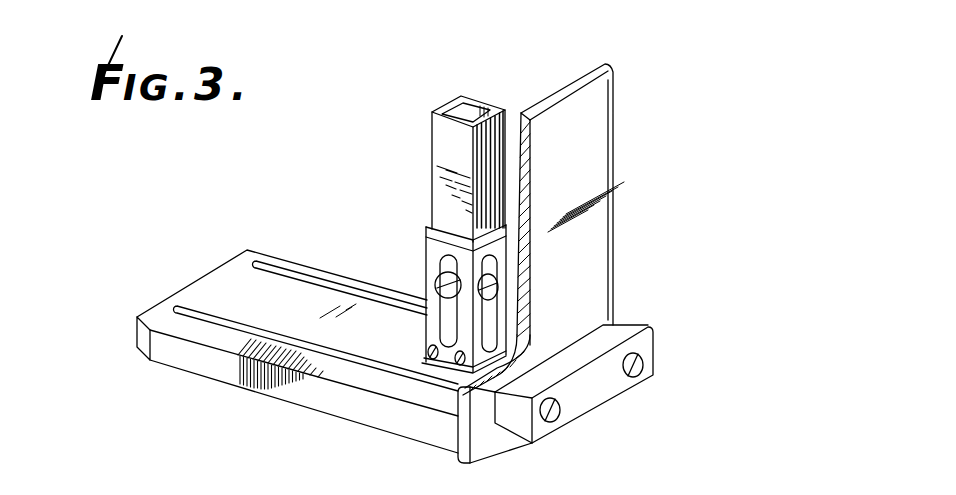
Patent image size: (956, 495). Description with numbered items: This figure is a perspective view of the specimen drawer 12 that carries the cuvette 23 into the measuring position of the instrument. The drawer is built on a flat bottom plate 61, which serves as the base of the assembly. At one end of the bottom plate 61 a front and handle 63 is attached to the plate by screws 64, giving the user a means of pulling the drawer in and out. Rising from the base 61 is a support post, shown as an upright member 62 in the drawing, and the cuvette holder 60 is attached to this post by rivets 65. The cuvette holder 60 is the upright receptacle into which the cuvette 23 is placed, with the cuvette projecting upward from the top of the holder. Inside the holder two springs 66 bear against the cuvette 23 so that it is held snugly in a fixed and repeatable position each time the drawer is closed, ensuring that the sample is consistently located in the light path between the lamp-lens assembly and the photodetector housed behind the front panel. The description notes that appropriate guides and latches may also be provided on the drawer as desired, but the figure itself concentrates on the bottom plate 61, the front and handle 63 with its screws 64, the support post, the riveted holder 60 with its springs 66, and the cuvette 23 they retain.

The specimen drawer 12 is at (574, 225).
The cuvette 23 is at (432, 157).
The cuvette holder 60 is at (433, 360).
The bottom plate 61 is at (210, 365).
The vertical plate 62 is at (593, 237).
The front and handle 63 is at (609, 392).
The screws 64 is at (644, 363).
The rivets 65 is at (423, 352).
The springs 66 is at (489, 313).